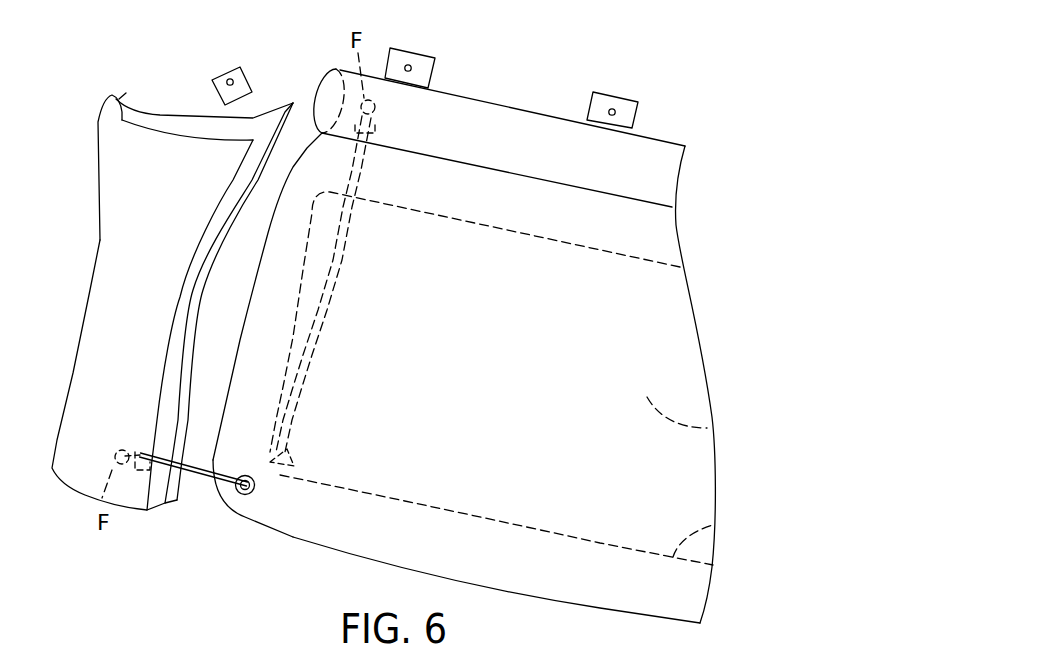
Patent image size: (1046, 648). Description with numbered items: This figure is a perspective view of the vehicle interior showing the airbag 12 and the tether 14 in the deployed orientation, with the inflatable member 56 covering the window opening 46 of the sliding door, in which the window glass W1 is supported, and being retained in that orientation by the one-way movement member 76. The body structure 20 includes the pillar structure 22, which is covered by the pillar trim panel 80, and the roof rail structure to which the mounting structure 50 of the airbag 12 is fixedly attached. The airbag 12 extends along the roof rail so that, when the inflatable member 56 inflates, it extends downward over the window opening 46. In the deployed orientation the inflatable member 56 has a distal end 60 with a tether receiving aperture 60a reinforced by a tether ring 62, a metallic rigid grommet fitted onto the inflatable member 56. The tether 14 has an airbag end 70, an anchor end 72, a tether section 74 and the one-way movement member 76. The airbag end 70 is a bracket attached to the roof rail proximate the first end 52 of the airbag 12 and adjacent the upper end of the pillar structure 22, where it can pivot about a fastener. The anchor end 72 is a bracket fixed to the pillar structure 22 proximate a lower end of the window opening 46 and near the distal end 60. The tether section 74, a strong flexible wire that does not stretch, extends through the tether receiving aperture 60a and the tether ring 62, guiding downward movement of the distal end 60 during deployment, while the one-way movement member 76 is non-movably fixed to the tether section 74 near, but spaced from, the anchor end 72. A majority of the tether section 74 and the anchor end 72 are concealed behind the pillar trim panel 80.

The airbag 12 is at (521, 105).
The tether 14 is at (330, 278).
The body structure 20 is at (690, 99).
The pillar structure 22 is at (170, 120).
The window opening 46 is at (715, 525).
The mounting structure 50 is at (428, 53).
The first end 52 is at (322, 82).
The inflatable member 56 is at (657, 315).
The distal end 60 is at (233, 502).
The tether receiving aperture 60a is at (247, 476).
The tether ring 62 is at (257, 492).
The airbag end 70 is at (378, 115).
The anchor end 72 is at (122, 448).
The tether section 74 is at (305, 370).
The one-way movement member 76 is at (297, 453).
The pillar trim panel 80 is at (138, 183).
The window glass W1 is at (710, 428).